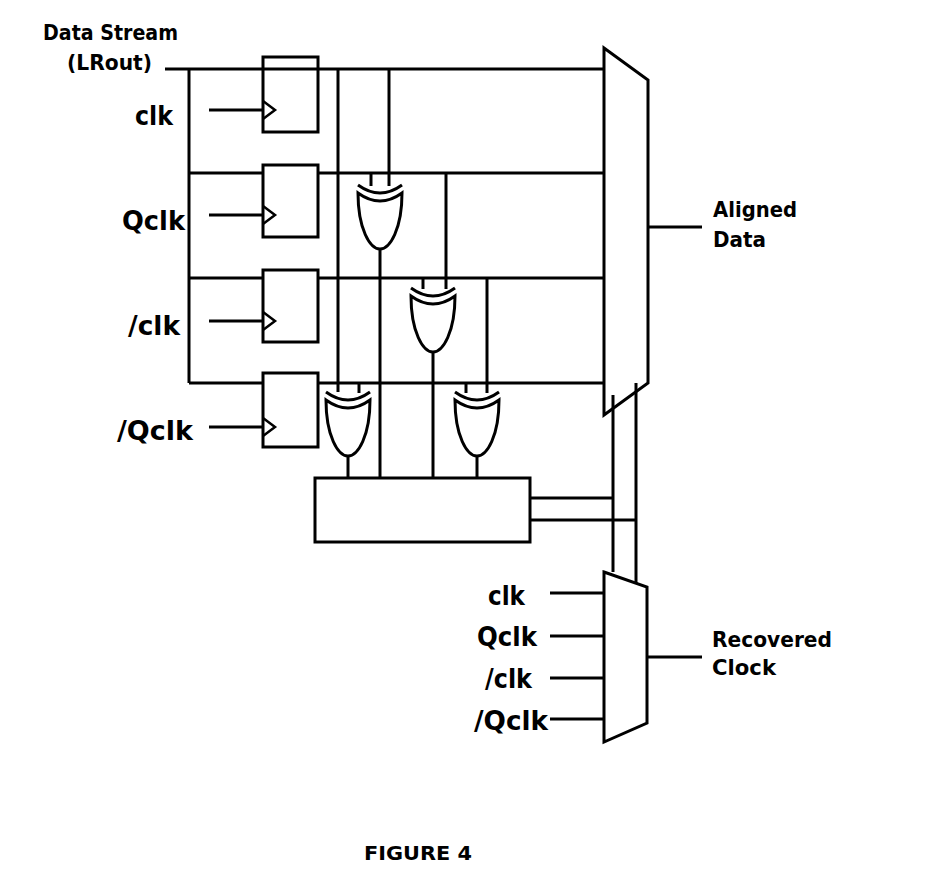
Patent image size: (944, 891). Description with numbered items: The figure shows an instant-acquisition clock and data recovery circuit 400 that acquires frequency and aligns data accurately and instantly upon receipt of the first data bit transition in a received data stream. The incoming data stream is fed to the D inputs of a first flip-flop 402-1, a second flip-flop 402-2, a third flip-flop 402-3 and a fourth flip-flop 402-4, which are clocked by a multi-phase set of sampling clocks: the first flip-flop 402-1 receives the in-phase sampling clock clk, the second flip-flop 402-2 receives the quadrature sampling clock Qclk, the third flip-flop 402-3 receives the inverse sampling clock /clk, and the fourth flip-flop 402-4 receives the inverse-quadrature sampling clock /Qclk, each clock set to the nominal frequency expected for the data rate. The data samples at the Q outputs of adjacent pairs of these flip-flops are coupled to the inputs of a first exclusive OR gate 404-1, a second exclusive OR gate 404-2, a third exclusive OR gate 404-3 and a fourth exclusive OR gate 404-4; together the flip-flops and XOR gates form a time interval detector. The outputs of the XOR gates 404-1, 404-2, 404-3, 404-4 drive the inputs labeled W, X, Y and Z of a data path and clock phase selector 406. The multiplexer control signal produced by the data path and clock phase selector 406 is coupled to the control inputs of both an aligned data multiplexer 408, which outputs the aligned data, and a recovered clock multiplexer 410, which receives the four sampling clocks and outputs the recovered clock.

The instant-acquisition clock and data recovery circuit 400 is at (193, 611).
The first flip-flop 402-1 is at (262, 129).
The second flip-flop 402-2 is at (260, 236).
The third flip-flop 402-3 is at (260, 340).
The fourth flip-flop 402-4 is at (258, 445).
The first exclusive OR gate 404-1 is at (326, 450).
The second exclusive OR gate 404-2 is at (406, 227).
The third exclusive OR gate 404-3 is at (455, 333).
The fourth exclusive OR gate 404-4 is at (503, 432).
The data path and clock phase selector 406 is at (313, 541).
The aligned data multiplexer 408 is at (635, 57).
The recovered clock multiplexer 410 is at (648, 583).